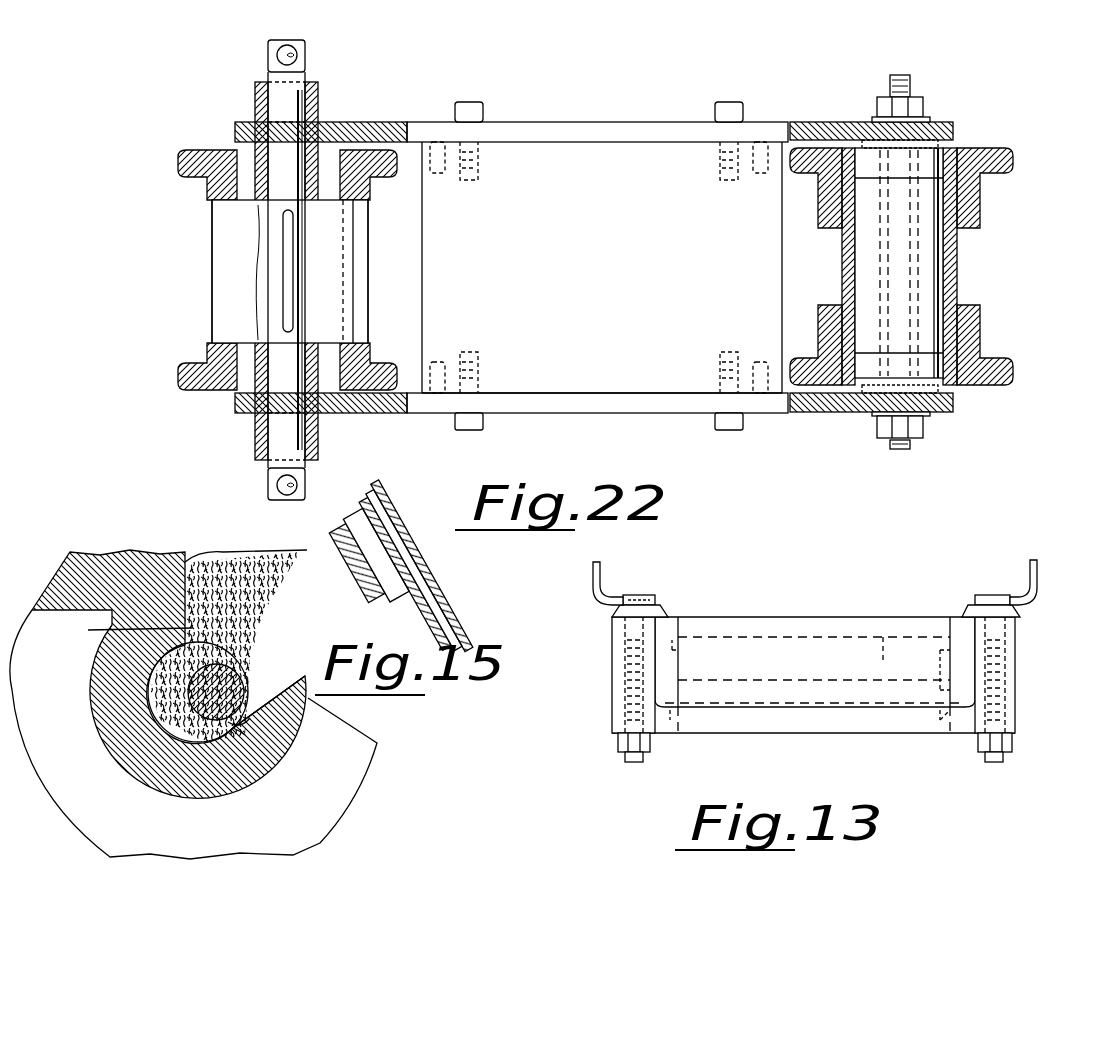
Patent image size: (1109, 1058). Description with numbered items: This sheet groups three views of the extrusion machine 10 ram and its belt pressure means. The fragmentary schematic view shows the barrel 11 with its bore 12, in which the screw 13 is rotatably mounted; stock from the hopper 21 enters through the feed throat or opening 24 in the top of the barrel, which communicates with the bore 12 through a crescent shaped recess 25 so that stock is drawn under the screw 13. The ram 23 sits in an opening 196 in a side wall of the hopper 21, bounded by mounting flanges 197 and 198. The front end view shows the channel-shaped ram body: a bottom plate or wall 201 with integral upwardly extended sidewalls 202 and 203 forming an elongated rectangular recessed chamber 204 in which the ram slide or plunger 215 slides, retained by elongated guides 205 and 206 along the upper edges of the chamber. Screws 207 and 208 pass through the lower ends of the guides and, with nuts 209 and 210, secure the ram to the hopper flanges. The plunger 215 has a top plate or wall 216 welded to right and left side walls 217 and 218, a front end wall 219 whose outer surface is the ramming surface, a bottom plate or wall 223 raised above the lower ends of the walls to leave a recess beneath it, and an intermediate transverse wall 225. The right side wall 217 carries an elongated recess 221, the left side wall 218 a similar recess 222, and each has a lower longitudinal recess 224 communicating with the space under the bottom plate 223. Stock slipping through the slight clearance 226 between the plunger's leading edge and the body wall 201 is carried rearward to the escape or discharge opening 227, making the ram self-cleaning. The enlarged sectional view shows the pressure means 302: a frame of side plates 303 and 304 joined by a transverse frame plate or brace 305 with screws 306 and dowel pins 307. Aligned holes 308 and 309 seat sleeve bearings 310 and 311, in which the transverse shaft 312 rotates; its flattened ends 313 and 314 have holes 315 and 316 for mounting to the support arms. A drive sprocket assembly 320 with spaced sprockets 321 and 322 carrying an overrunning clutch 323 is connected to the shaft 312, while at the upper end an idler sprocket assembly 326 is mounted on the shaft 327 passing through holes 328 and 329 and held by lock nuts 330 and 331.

In FIG. 22, the pressure means 302 is at (625, 105).
In FIG. 22, the side plate 303 is at (583, 132).
In FIG. 22, the side plate 304 is at (628, 400).
In FIG. 22, the transverse frame plate 305 is at (565, 375).
In FIG. 22, the screws 306 is at (470, 102).
In FIG. 22, the dowel pins 307 is at (440, 128).
In FIG. 22, the hole 308 is at (256, 126).
In FIG. 22, the hole 309 is at (246, 414).
In FIG. 22, the sleeve bearing 310 is at (258, 96).
In FIG. 22, the sleeve bearing 311 is at (258, 440).
In FIG. 22, the transverse shaft 312 is at (284, 262).
In FIG. 22, the flattened end 313 is at (283, 40).
In FIG. 22, the flattened end 314 is at (268, 488).
In FIG. 22, the hole 315 is at (298, 56).
In FIG. 22, the hole 316 is at (299, 484).
In FIG. 22, the drive sprocket assembly 320 is at (212, 240).
In FIG. 22, the sprocket 321 is at (190, 176).
In FIG. 22, the sprocket 322 is at (185, 380).
In FIG. 22, the overrunning clutch 323 is at (214, 312).
In FIG. 22, the idler sprocket assembly 326 is at (985, 196).
In FIG. 22, the shaft 327 is at (904, 85).
In FIG. 22, the hole 328 is at (938, 132).
In FIG. 22, the hole 329 is at (940, 407).
In FIG. 22, the lock nut 330 is at (918, 108).
In FIG. 22, the lock nut 331 is at (885, 430).
In FIG. 15, the extrusion machine 10 is at (42, 585).
In FIG. 15, the barrel 11 is at (214, 792).
In FIG. 15, the bore 12 is at (165, 708).
In FIG. 15, the screw 13 is at (275, 755).
In FIG. 15, the hopper 21 is at (217, 552).
In FIG. 15, the ram 23 is at (312, 548).
In FIG. 15, the feed throat 24 is at (125, 630).
In FIG. 15, the crescent shaped recess 25 is at (260, 720).
In FIG. 15, the ram slide 215 is at (350, 535).
In FIG. 13, the ram slide 215 is at (848, 618).
In FIG. 15, the bottom plate 201 is at (392, 555).
In FIG. 13, the bottom plate 201 is at (828, 720).
In FIG. 15, the escape opening 227 is at (340, 613).
In FIG. 13, the escape opening 227 is at (945, 725).
In FIG. 15, the clearance 226 is at (313, 640).
In FIG. 13, the recessed chamber 204 is at (668, 628).
In FIG. 13, the right side wall 217 is at (814, 653).
In FIG. 13, the bottom plate 223 is at (815, 676).
In FIG. 13, the recess 222 is at (950, 668).
In FIG. 13, the elongated recess 221 is at (672, 660).
In FIG. 13, the left side wall 218 is at (950, 656).
In FIG. 13, the recess 224 is at (674, 712).
In FIG. 13, the top plate 216 is at (782, 628).
In FIG. 13, the front end wall 219 is at (812, 630).
In FIG. 13, the intermediate transverse wall 225 is at (883, 640).
In FIG. 13, the sidewall 202 is at (618, 690).
In FIG. 13, the screws 207 is at (632, 642).
In FIG. 13, the mounting flange 198 is at (650, 596).
In FIG. 13, the opening 196 is at (650, 600).
In FIG. 13, the elongated guide 205 is at (614, 608).
In FIG. 13, the nut 209 is at (614, 745).
In FIG. 13, the sidewall 203 is at (1010, 693).
In FIG. 13, the screws 208 is at (1003, 640).
In FIG. 13, the elongated guide 206 is at (1012, 608).
In FIG. 13, the mounting flange 197 is at (975, 598).
In FIG. 13, the nut 210 is at (1012, 742).